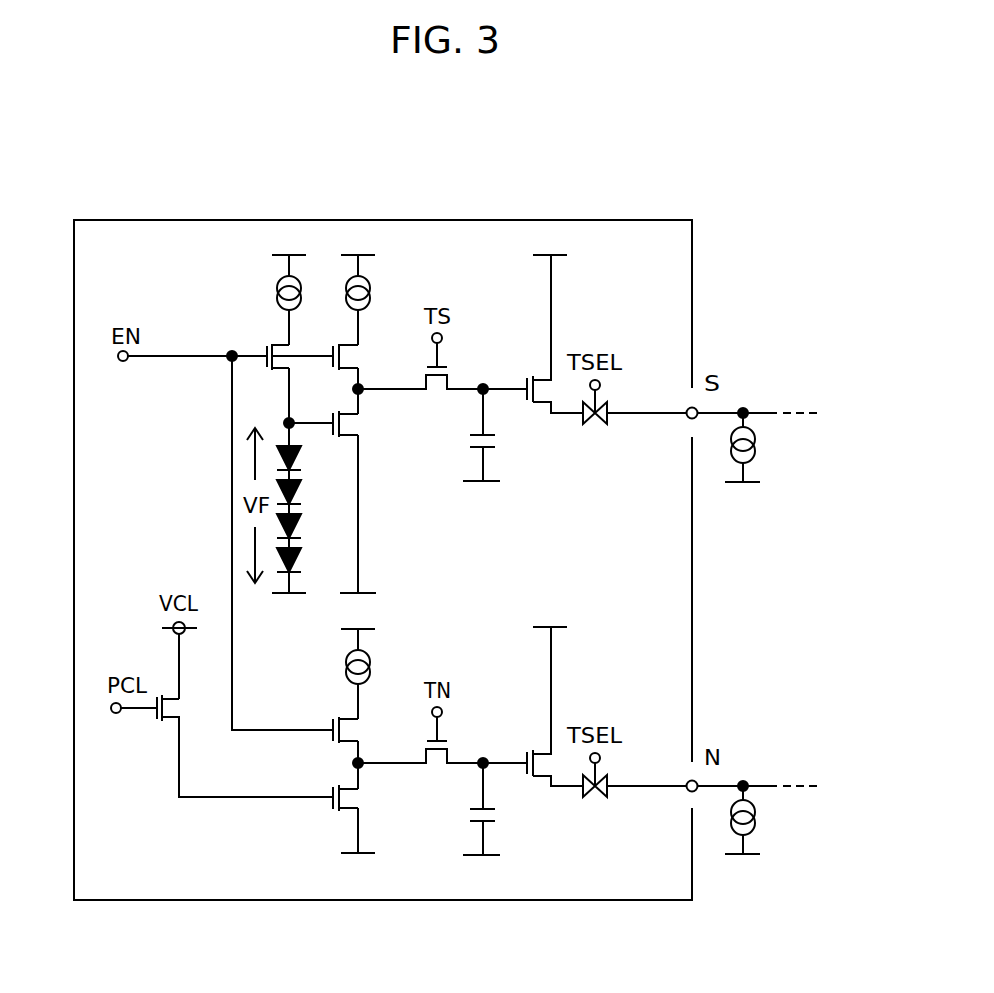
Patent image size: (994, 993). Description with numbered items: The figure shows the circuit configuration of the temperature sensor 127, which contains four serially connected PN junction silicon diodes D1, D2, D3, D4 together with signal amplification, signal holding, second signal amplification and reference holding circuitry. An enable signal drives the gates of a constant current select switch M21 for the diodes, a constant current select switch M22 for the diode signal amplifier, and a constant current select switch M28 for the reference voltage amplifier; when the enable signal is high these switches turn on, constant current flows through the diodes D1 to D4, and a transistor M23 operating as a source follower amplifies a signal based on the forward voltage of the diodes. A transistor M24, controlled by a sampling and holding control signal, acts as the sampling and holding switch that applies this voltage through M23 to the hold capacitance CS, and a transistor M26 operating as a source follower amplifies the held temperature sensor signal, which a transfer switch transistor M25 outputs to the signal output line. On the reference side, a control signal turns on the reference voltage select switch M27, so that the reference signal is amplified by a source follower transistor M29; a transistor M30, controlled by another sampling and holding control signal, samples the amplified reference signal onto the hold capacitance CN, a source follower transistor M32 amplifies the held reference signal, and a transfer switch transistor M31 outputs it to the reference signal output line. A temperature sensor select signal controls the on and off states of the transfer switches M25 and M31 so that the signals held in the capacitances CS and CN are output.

The temperature sensor 127 is at (478, 220).
The constant current select switch for a diode M21 is at (302, 371).
The constant current select switch for a diode signal amplifier M22 is at (368, 379).
The transistor of the signal amplification unit M23 is at (344, 502).
The sampling and holding transistor M24 is at (420, 376).
The transfer switch S M25 is at (595, 419).
The signal amplification transistor of the signal holding unit M26 is at (533, 334).
The reference voltage select switch M27 is at (245, 746).
The constant current select switch for a reference voltage amplifier M28 is at (368, 753).
The transistor of the second signal amplification unit M29 is at (368, 819).
The sampling and holding transistor M30 is at (420, 750).
The transfer switch N M31 is at (595, 792).
The signal amplification transistor of the reference holding unit M32 is at (533, 706).
The diode D1 is at (308, 558).
The diode D2 is at (308, 529).
The diode D3 is at (308, 495).
The diode D4 is at (308, 461).
The capacitance CS is at (497, 435).
The capacitance CN is at (497, 809).